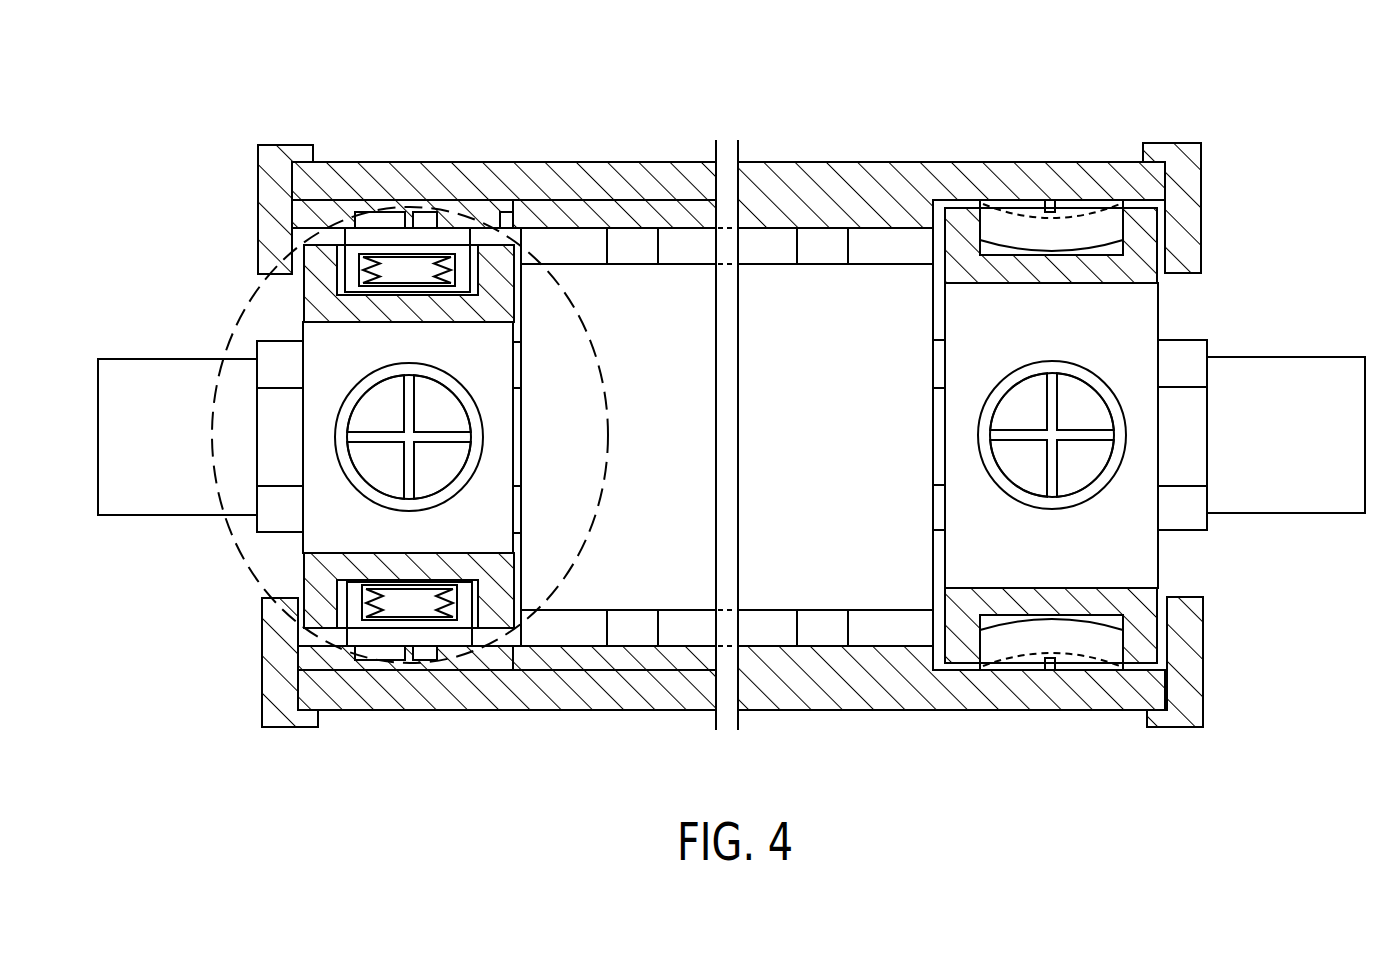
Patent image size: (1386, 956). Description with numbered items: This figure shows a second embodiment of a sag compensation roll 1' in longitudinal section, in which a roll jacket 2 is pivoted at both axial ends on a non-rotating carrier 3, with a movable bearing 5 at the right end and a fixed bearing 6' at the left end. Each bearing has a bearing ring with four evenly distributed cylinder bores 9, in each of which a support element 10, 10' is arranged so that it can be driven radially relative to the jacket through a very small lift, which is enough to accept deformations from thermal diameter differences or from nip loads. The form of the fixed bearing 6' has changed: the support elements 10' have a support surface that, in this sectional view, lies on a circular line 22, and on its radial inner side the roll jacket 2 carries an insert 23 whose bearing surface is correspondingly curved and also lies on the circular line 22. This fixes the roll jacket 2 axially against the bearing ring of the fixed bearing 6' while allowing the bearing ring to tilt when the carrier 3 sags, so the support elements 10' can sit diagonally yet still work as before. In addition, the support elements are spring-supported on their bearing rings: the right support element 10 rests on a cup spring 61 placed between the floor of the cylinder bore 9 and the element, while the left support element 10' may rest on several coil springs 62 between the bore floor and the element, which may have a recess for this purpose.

The sag compensation roll 1' is at (729, 378).
The roll jacket 2 is at (942, 167).
The carrier 3 is at (1316, 508).
The bearing 5 is at (1104, 442).
The fixed bearing 6' is at (397, 437).
The cylinder bore 9 is at (1113, 253).
The support element 10 is at (1054, 182).
The support element 10' is at (417, 206).
The circular line 22 is at (562, 192).
The insert 23 is at (375, 210).
The cup spring 61 is at (1112, 625).
The coil springs 62 is at (452, 600).